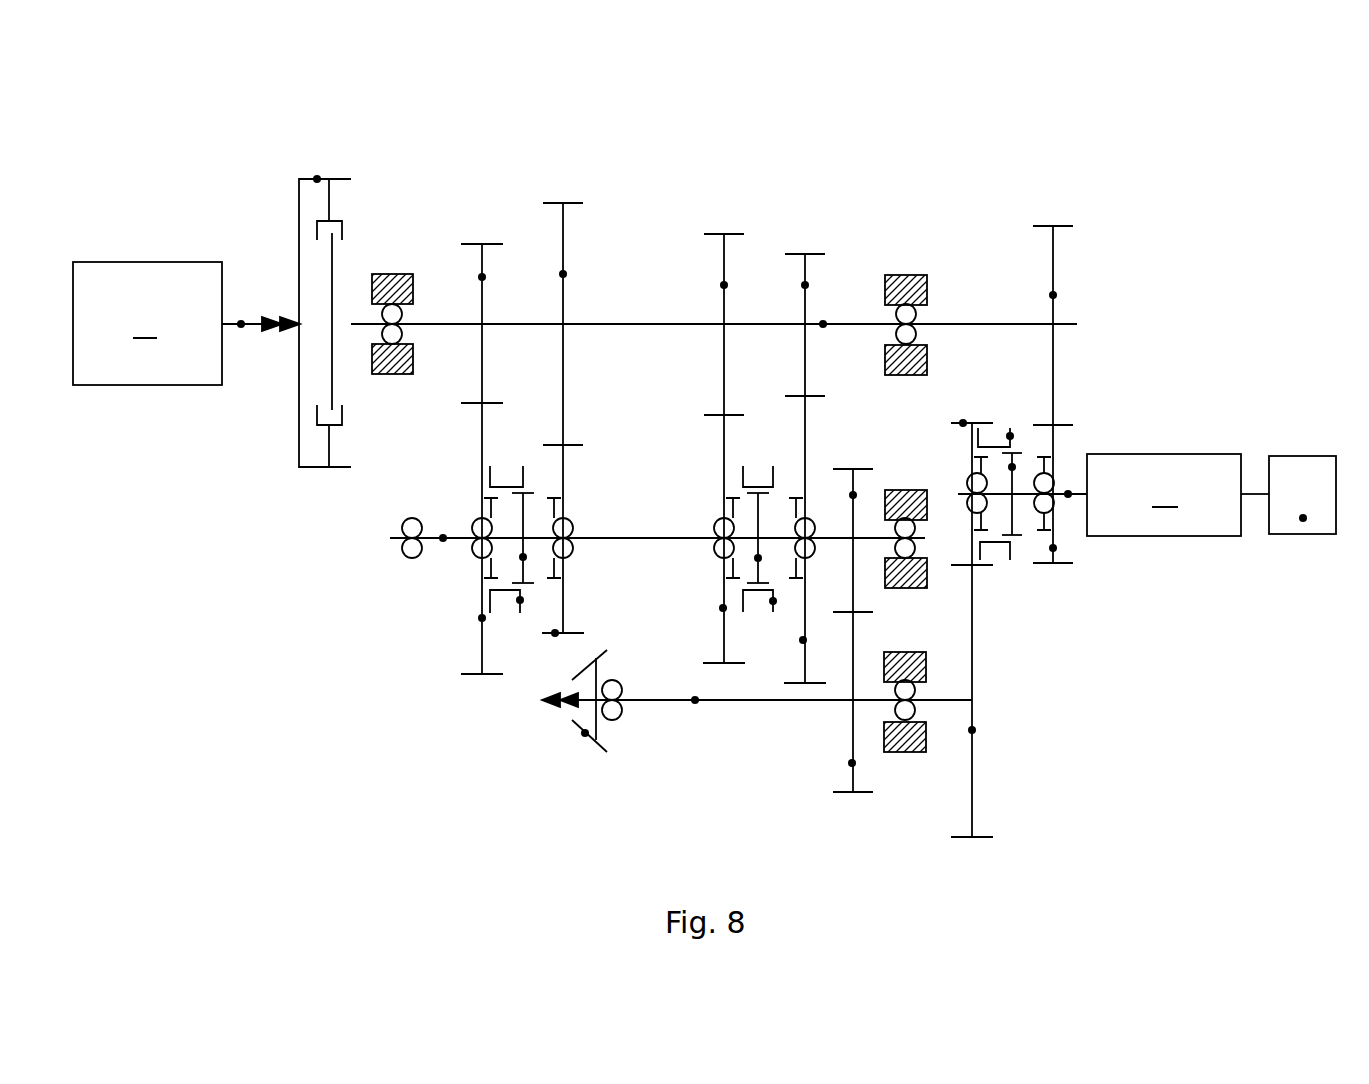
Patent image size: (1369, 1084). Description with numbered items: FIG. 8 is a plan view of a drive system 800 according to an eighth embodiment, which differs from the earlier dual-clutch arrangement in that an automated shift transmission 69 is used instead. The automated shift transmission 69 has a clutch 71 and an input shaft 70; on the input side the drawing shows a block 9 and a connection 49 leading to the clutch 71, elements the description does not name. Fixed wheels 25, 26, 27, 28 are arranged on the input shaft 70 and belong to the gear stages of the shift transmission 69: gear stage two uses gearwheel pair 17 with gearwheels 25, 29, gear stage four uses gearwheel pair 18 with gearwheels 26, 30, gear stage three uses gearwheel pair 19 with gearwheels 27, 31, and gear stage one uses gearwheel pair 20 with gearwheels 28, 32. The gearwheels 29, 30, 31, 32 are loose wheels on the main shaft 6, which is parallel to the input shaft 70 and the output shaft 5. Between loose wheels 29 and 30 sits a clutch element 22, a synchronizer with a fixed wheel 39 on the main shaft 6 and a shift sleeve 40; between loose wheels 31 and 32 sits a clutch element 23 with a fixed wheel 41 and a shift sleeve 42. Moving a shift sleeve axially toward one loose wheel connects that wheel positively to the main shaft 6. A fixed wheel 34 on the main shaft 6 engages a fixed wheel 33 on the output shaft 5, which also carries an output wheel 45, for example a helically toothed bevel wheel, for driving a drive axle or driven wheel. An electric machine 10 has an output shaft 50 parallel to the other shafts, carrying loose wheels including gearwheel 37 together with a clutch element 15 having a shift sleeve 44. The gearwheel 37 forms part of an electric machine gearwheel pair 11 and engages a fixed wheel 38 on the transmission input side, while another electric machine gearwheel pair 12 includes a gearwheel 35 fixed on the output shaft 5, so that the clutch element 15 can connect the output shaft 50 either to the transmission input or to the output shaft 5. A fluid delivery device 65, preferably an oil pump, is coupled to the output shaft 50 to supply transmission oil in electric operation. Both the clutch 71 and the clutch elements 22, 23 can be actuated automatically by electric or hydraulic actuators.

The drive system 800 is at (175, 136).
The internal combustion engine 9 is at (147, 323).
The engine output shaft 49 is at (241, 324).
The clutch 71 is at (317, 179).
The gearwheel pair 17 is at (476, 217).
The gearwheel 25 is at (482, 277).
The gearwheel pair 18 is at (569, 178).
The gearwheel 26 is at (563, 274).
The automated shift transmission 69 is at (652, 174).
The gearwheel pair 19 is at (728, 207).
The gearwheel 27 is at (724, 285).
The gearwheel pair 20 is at (812, 229).
The gearwheel 28 is at (805, 285).
The input shaft 70 is at (823, 324).
The fixed wheel 34 is at (853, 495).
The electric machine gearwheel pair 11 is at (1078, 245).
The fixed wheel 38 is at (1053, 295).
The shift sleeve 44 is at (1012, 467).
The output shaft 50 is at (1068, 494).
The electric machine 10 is at (1178, 495).
The fluid delivery device 65 is at (1303, 518).
The gearwheel 37 is at (1053, 548).
The clutch element 15 is at (1032, 577).
The gearwheel 35 is at (972, 730).
The electric machine gearwheel pair 12 is at (998, 774).
The main shaft 6 is at (443, 538).
The output shaft 5 is at (695, 700).
The fixed wheel 39 is at (523, 557).
The gearwheel 29 is at (482, 618).
The clutch element 22 is at (494, 630).
The shift sleeve 40 is at (520, 600).
The gearwheel 30 is at (555, 633).
The output wheel 45 is at (585, 733).
The fixed wheel 41 is at (758, 558).
The gearwheel 31 is at (723, 608).
The clutch element 23 is at (749, 638).
The shift sleeve 42 is at (773, 601).
The gearwheel 32 is at (803, 640).
The fixed wheel 33 is at (852, 763).